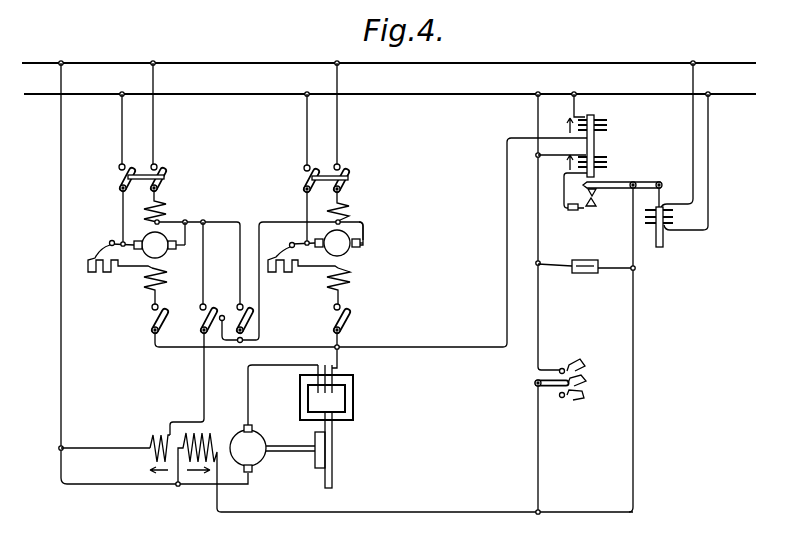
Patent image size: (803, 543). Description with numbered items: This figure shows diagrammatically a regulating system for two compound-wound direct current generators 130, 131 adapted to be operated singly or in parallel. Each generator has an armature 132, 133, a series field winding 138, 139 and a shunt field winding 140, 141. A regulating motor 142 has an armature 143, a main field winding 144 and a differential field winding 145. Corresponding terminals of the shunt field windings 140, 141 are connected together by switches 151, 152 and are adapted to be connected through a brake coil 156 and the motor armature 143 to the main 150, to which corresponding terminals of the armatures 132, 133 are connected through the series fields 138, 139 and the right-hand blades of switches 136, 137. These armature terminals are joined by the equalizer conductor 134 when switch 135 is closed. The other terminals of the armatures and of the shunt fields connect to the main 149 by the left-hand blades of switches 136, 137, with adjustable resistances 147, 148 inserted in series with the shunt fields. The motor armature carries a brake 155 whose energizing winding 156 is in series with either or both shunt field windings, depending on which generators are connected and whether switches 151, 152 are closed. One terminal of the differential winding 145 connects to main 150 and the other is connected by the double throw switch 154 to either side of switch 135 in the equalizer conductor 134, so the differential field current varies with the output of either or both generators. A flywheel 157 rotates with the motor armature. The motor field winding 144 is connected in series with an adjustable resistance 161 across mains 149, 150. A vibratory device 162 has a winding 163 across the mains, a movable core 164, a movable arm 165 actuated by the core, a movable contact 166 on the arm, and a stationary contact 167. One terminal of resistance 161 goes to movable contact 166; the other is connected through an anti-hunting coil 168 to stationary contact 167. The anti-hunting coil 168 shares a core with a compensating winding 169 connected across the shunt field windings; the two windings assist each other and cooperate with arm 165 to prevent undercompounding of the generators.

The direct current generator 130 is at (167, 217).
The direct current generator 131 is at (381, 225).
The armature 132 is at (161, 251).
The armature 133 is at (356, 250).
The equalizer conductor 134 is at (241, 219).
The switch 135 is at (253, 317).
The switch 136 is at (119, 179).
The switch 137 is at (349, 177).
The series field winding 138 is at (163, 204).
The series field winding 139 is at (352, 207).
The shunt field winding 140 is at (148, 290).
The shunt field winding 141 is at (353, 287).
The motor 142 is at (290, 464).
The armature 143 is at (258, 430).
The main field winding 144 is at (209, 433).
The differential field winding 145 is at (154, 432).
The adjustable resistance 147 is at (98, 272).
The adjustable resistance 148 is at (292, 272).
The main 149 is at (270, 93).
The main 150 is at (270, 62).
The switch 151 is at (164, 316).
The switch 152 is at (350, 318).
The double throw switch 154 is at (212, 310).
The brake 155 is at (345, 450).
The brake coil 156 is at (352, 373).
The flywheel 157 is at (317, 470).
The adjustable resistance 161 is at (586, 364).
The vibratory device 162 is at (682, 221).
The winding 163 is at (668, 213).
The movable core 164 is at (661, 248).
The movable arm 165 is at (618, 183).
The movable contact 166 is at (596, 190).
The stationary contact 167 is at (595, 205).
The anti-hunting coil 168 is at (601, 164).
The compensating winding 169 is at (600, 133).